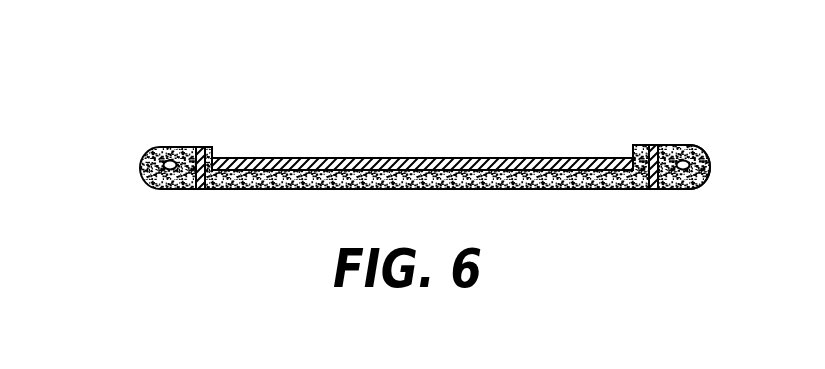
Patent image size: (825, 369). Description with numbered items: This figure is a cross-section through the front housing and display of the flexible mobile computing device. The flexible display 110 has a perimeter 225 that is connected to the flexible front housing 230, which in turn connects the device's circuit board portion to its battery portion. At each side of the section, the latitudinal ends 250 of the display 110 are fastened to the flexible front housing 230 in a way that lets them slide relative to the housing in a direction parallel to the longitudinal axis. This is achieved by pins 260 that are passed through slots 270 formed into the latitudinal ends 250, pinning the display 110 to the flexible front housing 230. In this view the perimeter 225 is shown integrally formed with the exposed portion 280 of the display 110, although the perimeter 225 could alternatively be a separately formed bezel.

The flexible display 110 is at (376, 119).
The perimeter 225 is at (210, 190).
The flexible front housing 230 is at (696, 151).
The latitudinal ends 250 is at (205, 149).
The pins 260 is at (199, 148).
The slots 270 is at (168, 150).
The exposed portion 280 is at (497, 122).